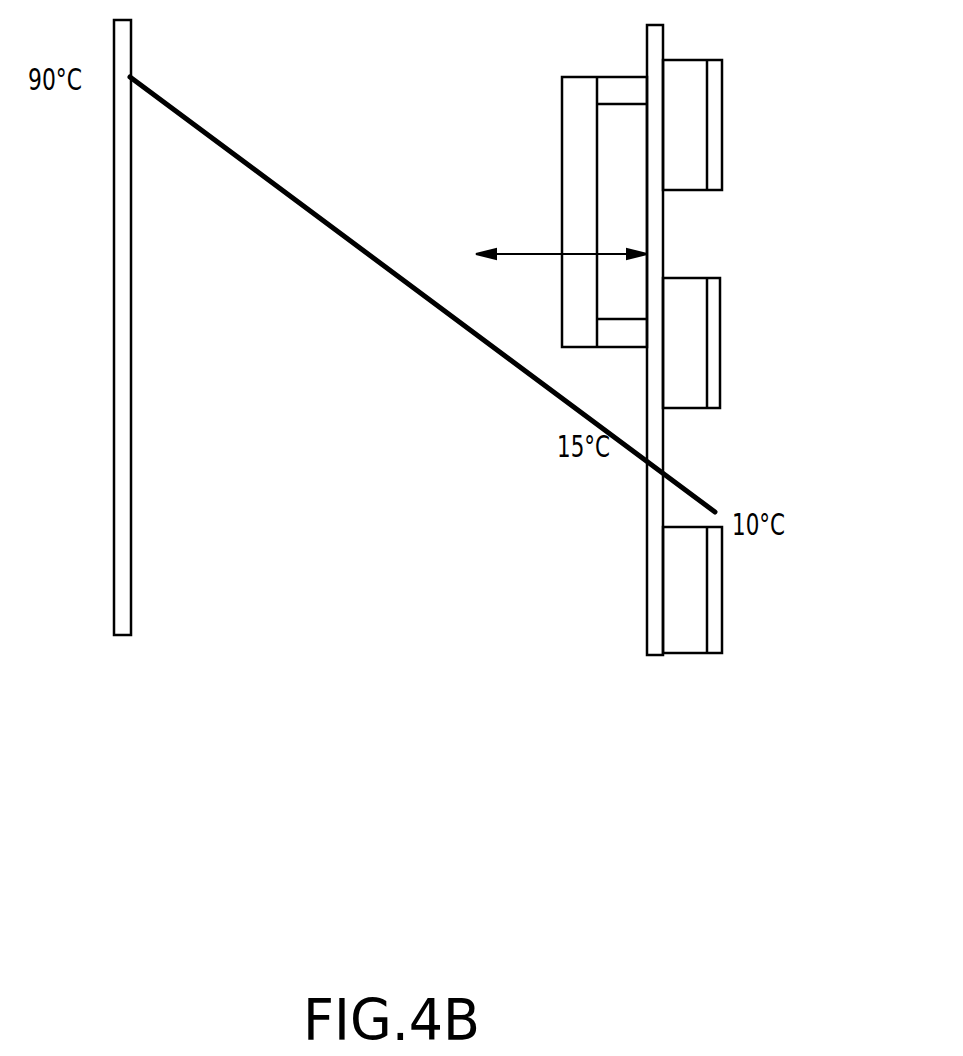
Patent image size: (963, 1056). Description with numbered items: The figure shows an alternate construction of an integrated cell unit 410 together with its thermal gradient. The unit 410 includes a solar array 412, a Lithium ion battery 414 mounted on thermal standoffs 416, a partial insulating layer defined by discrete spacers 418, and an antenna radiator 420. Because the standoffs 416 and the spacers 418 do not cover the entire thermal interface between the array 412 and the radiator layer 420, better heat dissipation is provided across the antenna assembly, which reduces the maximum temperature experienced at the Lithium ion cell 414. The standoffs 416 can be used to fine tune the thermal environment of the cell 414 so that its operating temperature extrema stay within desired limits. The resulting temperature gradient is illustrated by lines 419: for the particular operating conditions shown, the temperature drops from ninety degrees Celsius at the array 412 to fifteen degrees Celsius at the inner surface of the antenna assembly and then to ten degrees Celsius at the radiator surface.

The integrated cell unit 410 is at (388, 612).
The solar array 412 is at (131, 560).
The Lithium ion battery 414 is at (562, 297).
The thermal standoffs 416 is at (632, 331).
The discrete spacers 418 is at (687, 650).
The temperature gradient lines 419 is at (628, 421).
The antenna radiator 420 is at (710, 567).